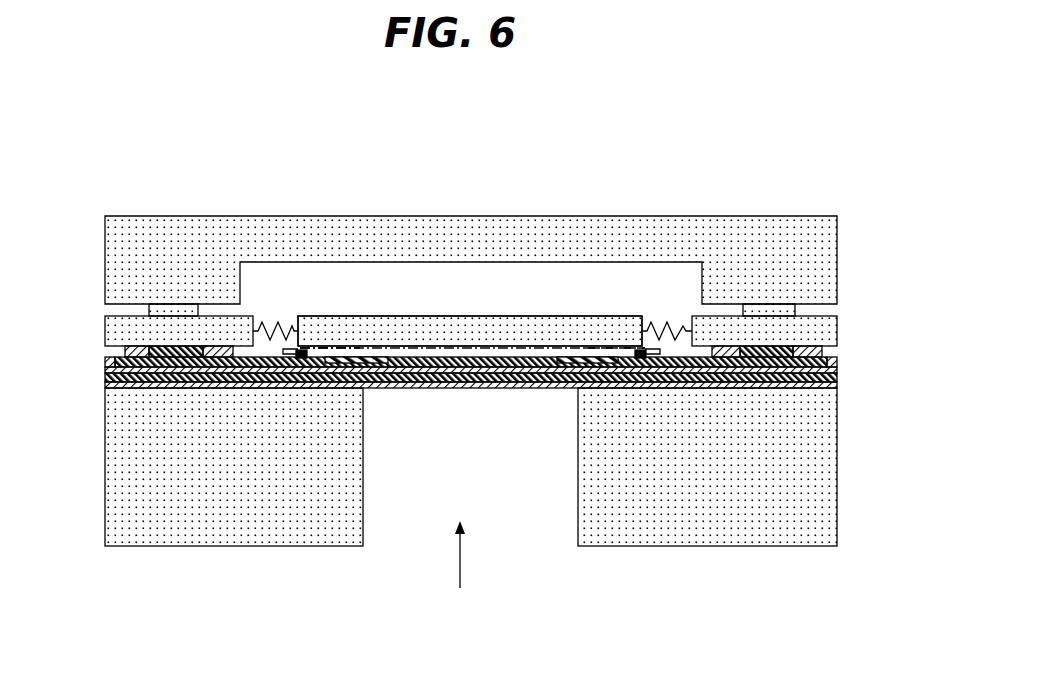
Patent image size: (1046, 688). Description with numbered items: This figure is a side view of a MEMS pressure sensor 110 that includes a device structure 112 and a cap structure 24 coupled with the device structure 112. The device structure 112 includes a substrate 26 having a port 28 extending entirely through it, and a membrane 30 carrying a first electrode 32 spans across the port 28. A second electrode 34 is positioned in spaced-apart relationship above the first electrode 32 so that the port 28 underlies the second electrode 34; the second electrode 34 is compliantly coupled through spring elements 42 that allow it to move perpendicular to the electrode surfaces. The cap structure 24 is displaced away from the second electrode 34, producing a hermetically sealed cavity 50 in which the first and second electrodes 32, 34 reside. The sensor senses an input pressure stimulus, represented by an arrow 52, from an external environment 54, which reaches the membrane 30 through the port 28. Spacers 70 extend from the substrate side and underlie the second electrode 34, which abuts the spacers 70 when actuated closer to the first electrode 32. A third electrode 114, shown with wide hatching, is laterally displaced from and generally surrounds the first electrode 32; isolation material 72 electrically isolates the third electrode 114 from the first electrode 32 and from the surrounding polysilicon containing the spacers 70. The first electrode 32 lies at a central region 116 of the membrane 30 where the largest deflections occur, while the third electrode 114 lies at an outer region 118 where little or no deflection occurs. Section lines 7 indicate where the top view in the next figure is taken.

The cap structure 24 is at (100, 304).
The substrate 26 is at (142, 541).
The port 28 is at (459, 462).
The membrane 30 is at (420, 384).
The first electrode 32 is at (438, 350).
The second electrode 34 is at (477, 333).
The spring elements 42 is at (289, 331).
The cavity 50 is at (514, 306).
The arrow 52 is at (460, 570).
The environment 54 is at (394, 657).
The spacers 70 is at (299, 358).
The isolation material 72 is at (323, 362).
The pressure sensor 110 is at (798, 616).
The device structure 112 is at (100, 318).
The third electrode 114 is at (332, 366).
The central region 116 is at (418, 338).
The outer region 118 is at (338, 338).
The section lines 7 is at (286, 388).